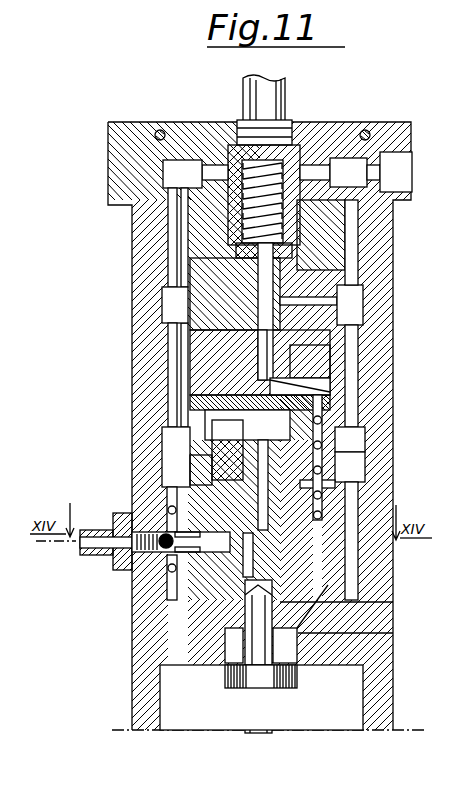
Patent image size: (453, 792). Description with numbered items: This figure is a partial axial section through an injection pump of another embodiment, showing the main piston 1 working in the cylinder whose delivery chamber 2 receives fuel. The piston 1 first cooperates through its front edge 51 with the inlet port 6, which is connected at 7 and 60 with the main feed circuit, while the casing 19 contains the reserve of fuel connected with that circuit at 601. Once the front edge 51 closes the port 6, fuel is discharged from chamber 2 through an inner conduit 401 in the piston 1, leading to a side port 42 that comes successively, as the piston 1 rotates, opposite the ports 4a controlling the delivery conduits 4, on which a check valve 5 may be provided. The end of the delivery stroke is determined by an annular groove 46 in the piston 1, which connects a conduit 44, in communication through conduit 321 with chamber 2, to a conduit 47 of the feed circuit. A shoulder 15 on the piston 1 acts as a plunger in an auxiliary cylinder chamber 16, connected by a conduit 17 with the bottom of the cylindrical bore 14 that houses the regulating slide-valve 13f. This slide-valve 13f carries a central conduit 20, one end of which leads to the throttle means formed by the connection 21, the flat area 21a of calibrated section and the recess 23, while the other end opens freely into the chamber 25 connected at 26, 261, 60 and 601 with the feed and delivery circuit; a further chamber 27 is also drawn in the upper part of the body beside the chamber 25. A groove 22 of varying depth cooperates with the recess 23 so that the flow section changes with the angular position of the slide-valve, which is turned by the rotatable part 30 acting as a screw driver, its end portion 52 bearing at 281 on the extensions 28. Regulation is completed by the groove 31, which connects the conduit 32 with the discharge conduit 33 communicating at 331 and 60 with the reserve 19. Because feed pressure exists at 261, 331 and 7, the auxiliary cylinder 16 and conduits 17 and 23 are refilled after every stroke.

The main piston 1 is at (298, 633).
The delivery chamber 2 is at (242, 428).
The delivery conduit 4 is at (112, 540).
The port 4a is at (217, 540).
The check valve 5 is at (122, 556).
The inlet port 6 is at (363, 437).
The feed connection 7 is at (355, 462).
The regulating slide-valve 13f is at (322, 272).
The cylindrical bore 14 is at (175, 296).
The shoulder 15 is at (244, 688).
The auxiliary cylinder chamber 16 is at (237, 652).
The conduit 17 is at (320, 602).
The auxiliary feed chamber 19 is at (345, 688).
The conduit 20 is at (263, 275).
The connection 21 is at (280, 347).
The flat area 21a is at (277, 360).
The groove 22 is at (293, 398).
The recess 23 is at (300, 384).
The chamber 25 is at (233, 167).
The connection 26 is at (349, 170).
The connection 261 is at (404, 130).
The chamber 27 is at (195, 174).
The extension 28 is at (292, 258).
The engagement point 281 is at (230, 240).
The rotatable part 30 is at (265, 90).
The groove 31 is at (232, 334).
The conduit 32 is at (188, 316).
The conduit 321 is at (228, 412).
The discharge conduit 33 is at (327, 303).
The connection 331 is at (358, 290).
The inner conduit 401 is at (260, 532).
The side port 42 is at (250, 566).
The conduit 44 is at (210, 465).
The annular groove 46 is at (280, 513).
The conduit 47 is at (325, 485).
The front edge 51 is at (235, 443).
The end portion 52 is at (322, 170).
The feed circuit connection 60 is at (357, 223).
The reserve connection 601 is at (357, 578).